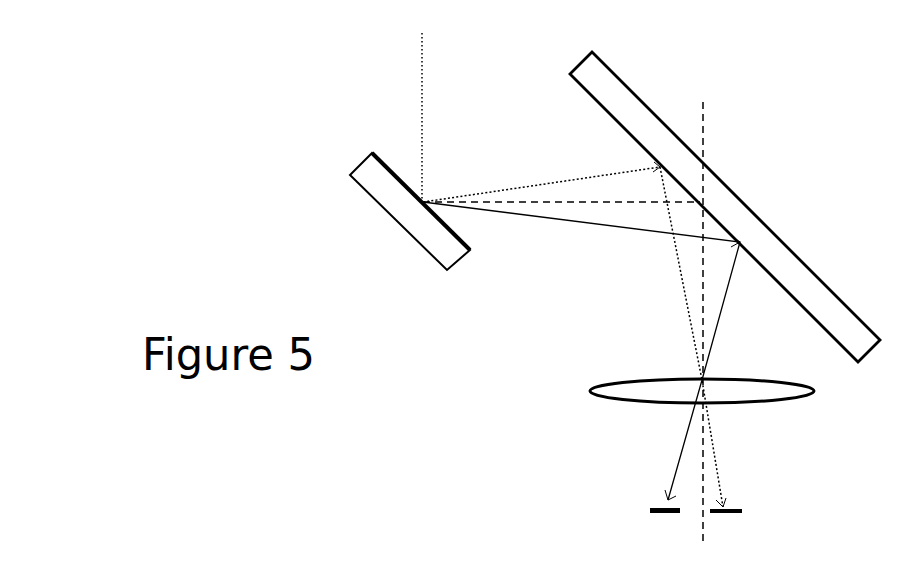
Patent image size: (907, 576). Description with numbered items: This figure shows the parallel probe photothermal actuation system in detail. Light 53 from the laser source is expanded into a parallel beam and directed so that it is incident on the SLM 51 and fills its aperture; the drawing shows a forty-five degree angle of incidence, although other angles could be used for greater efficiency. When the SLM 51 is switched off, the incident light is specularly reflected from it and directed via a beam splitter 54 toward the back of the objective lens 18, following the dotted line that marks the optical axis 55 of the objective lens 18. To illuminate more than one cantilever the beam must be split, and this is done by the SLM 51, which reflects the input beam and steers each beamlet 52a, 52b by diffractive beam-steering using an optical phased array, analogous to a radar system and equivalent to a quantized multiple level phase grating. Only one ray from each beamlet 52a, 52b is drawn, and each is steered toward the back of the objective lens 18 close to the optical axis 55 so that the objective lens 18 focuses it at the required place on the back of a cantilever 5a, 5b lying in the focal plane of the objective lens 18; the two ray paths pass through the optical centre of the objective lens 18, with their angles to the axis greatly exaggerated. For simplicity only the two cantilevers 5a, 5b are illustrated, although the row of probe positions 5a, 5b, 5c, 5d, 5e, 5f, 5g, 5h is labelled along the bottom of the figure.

The SLM 51 is at (378, 203).
The beamlet 52a is at (510, 187).
The beamlet 52b is at (552, 218).
The light 53 is at (418, 62).
The beam splitter 54 is at (615, 97).
The optical axis 55 is at (707, 125).
The objective lens 18 is at (595, 398).
The cantilever 5a is at (727, 513).
The cantilever 5b is at (663, 512).
The target position 5c is at (257, 568).
The target position 5d is at (328, 568).
The target position 5e is at (397, 568).
The target position 5f is at (474, 568).
The target position 5g is at (538, 568).
The target position 5h is at (186, 568).